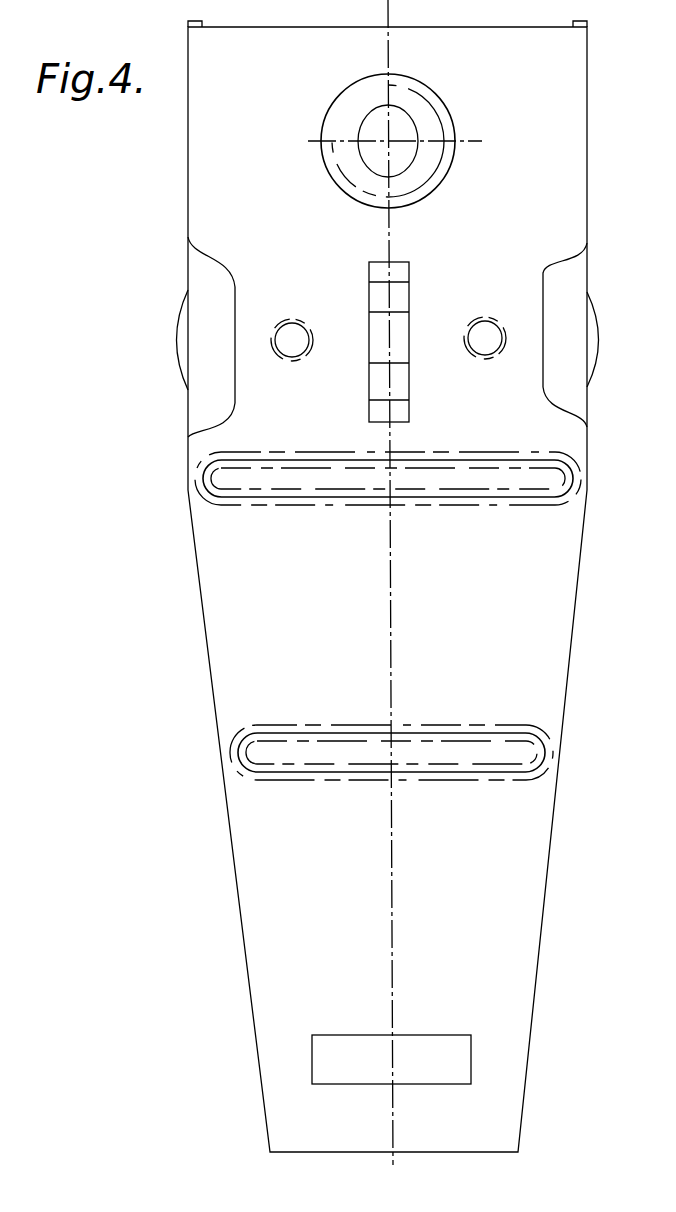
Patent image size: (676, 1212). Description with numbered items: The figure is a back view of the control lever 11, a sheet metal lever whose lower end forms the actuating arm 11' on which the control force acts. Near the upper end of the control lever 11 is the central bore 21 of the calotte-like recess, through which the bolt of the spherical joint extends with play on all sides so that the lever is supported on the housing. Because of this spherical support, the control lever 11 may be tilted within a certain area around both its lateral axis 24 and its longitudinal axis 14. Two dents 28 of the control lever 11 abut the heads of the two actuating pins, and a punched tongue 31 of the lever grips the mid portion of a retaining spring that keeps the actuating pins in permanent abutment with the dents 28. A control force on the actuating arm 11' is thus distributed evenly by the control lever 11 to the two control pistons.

The control lever 11 is at (418, 325).
The actuating arm 11' is at (403, 821).
The longitudinal axis 14 is at (390, 623).
The central bore 21 is at (403, 157).
The lateral axis 24 is at (404, 138).
The dents 28 is at (298, 328).
The punched tongue 31 is at (405, 385).